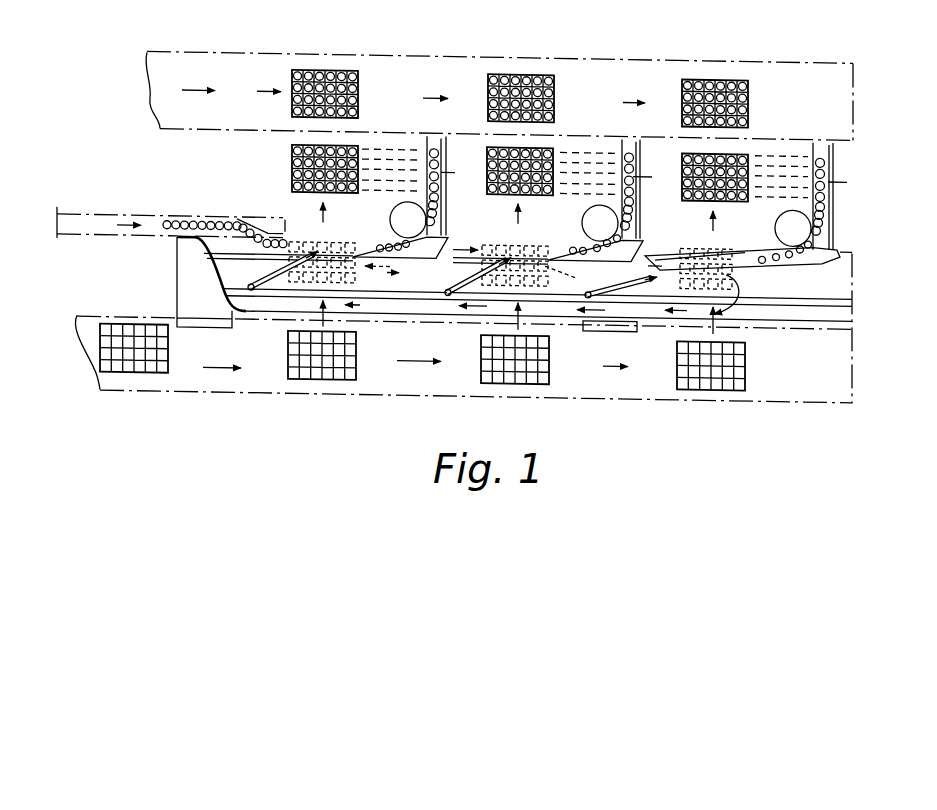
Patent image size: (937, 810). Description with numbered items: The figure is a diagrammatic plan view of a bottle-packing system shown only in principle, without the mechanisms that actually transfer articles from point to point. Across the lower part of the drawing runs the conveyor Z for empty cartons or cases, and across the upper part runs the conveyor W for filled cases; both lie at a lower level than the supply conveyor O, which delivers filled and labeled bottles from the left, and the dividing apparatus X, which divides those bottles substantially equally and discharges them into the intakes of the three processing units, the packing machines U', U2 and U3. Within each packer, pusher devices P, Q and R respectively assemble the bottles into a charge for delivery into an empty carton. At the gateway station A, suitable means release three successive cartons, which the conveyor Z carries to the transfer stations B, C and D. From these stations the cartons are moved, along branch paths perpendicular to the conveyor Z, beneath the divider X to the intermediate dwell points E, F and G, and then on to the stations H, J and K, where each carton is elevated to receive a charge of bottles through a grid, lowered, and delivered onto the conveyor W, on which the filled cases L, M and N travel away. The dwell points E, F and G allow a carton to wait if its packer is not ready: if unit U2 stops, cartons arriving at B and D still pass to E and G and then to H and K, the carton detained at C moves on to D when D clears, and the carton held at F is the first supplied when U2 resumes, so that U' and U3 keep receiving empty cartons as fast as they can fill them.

The crate of bottles on upper conveyor L is at (355, 58).
The crate of bottles on upper conveyor M is at (529, 64).
The crate of bottles on upper conveyor N is at (727, 78).
The conveyor for filled cases W is at (400, 59).
The station H is at (291, 178).
The station J is at (495, 190).
The station K is at (695, 192).
The processing unit U' is at (414, 180).
The processing unit U2 is at (665, 126).
The processing unit U3 is at (842, 147).
The pusher device P is at (456, 186).
The pusher device Q is at (651, 189).
The pusher device R is at (851, 194).
The supply conveyor O is at (98, 227).
The dividing apparatus X is at (148, 278).
The station E is at (338, 267).
The station F is at (516, 270).
The station G is at (749, 276).
The conveyor for empty cartons Z is at (272, 379).
The gateway station A is at (175, 376).
The transfer station B is at (348, 389).
The transfer station C is at (532, 385).
The transfer station D is at (737, 387).